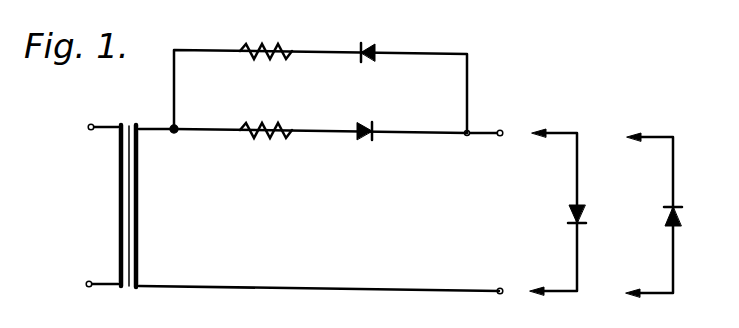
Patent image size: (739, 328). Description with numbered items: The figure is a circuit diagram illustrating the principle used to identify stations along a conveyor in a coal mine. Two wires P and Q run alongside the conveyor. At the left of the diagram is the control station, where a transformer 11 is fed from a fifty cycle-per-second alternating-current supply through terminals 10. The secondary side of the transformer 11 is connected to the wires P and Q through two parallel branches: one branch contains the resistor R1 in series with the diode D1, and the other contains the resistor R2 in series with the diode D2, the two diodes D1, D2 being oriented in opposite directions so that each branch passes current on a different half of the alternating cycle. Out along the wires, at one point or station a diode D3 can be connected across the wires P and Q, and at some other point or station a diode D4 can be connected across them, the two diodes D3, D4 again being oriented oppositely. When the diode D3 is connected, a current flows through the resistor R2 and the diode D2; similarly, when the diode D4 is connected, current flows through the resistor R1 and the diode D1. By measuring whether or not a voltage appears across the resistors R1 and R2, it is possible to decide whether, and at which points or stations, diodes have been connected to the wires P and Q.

The terminals 10 is at (91, 130).
The transformer 11 is at (134, 315).
The resistor R1 is at (266, 38).
The resistor R2 is at (266, 145).
The diode D1 is at (370, 39).
The diode D2 is at (362, 145).
The diode D3 is at (556, 212).
The diode D4 is at (654, 215).
The wire P is at (498, 120).
The wire Q is at (510, 279).